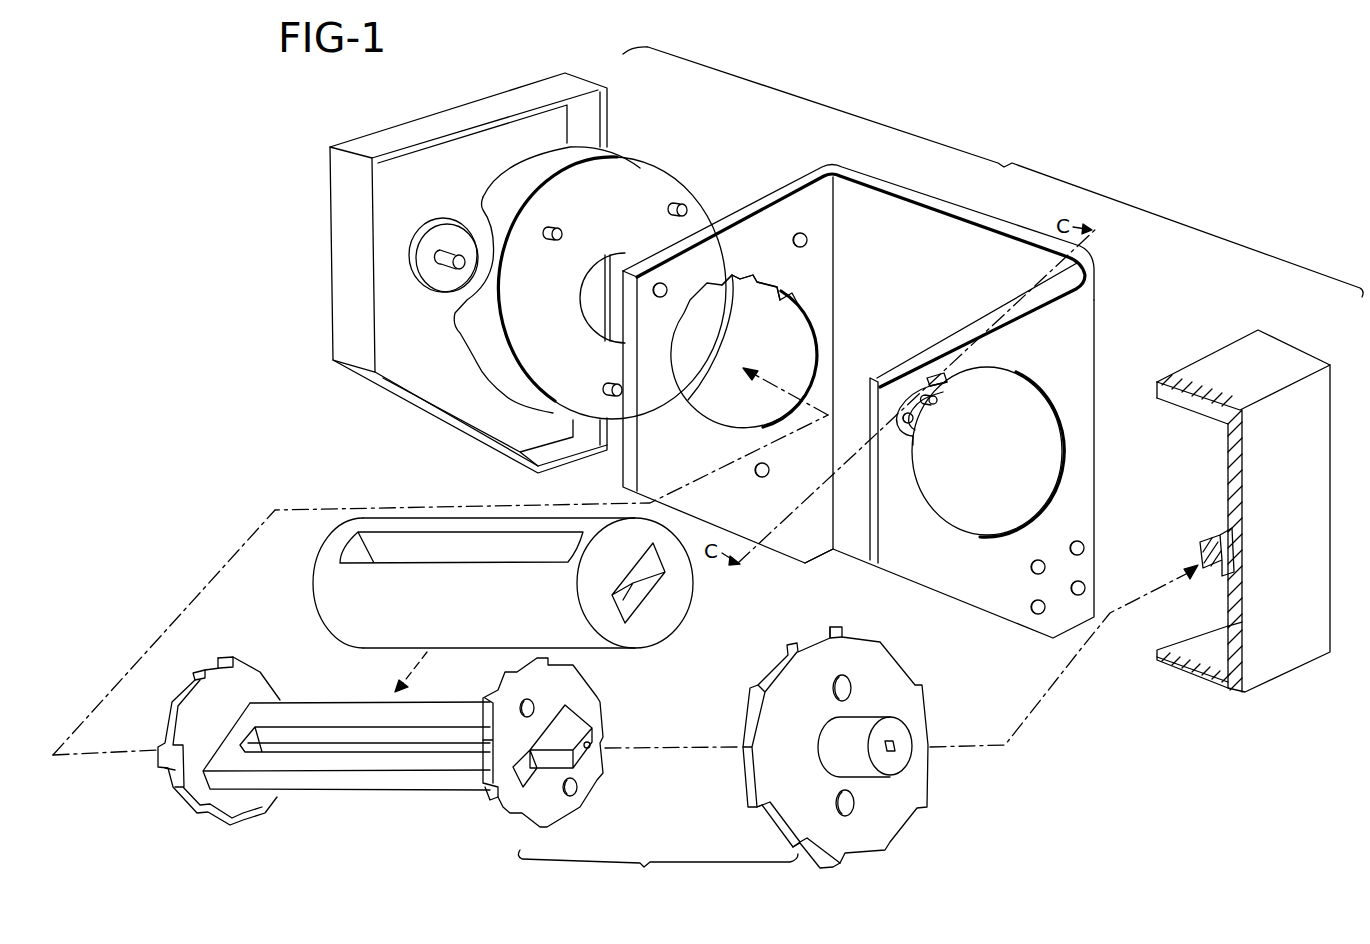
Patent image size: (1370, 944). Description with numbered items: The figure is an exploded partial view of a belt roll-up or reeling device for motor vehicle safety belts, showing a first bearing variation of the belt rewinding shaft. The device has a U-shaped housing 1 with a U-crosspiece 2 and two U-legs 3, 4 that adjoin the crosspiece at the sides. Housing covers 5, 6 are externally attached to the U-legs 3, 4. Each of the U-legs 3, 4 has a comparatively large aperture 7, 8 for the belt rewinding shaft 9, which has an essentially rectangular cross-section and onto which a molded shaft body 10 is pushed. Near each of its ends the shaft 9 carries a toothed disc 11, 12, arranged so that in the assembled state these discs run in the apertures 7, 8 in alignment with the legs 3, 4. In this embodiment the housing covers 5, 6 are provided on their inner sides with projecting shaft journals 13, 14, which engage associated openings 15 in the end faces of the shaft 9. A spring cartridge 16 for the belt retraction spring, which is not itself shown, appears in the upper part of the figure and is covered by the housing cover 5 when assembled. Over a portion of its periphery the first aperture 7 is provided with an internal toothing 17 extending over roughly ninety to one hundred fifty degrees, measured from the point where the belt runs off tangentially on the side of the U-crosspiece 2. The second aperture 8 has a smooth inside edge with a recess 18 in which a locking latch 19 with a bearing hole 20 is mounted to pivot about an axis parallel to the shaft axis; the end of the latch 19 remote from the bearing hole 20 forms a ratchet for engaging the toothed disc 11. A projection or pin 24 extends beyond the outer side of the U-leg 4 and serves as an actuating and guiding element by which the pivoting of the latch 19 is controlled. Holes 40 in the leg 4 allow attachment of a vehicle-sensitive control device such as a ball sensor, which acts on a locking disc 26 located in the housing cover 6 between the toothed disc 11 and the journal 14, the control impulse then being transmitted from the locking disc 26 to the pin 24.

The U-shaped housing 1 is at (896, 166).
The U-crosspiece 2 is at (935, 205).
The U-leg 3 is at (785, 210).
The U-leg 4 is at (967, 455).
The housing cover 5 is at (390, 196).
The housing cover 6 is at (1238, 345).
The first aperture 7 is at (749, 327).
The second aperture 8 is at (1003, 382).
The belt roll-up or rewinding shaft 9 is at (307, 727).
The molded shaft body 10 is at (323, 585).
The toothed disc 11 is at (564, 742).
The toothed disc 12 is at (213, 682).
The shaft journal 13 is at (442, 262).
The shaft journal 14 is at (1200, 548).
The opening 15 is at (597, 738).
The spring cartridge 16 is at (643, 172).
The internal toothing 17 is at (780, 290).
The recess 18 is at (908, 412).
The locking latch 19 is at (920, 398).
The bearing hole 20 is at (917, 373).
The projection or pin 24 is at (945, 382).
The locking disc 26 is at (908, 702).
The holes 40 is at (1080, 585).